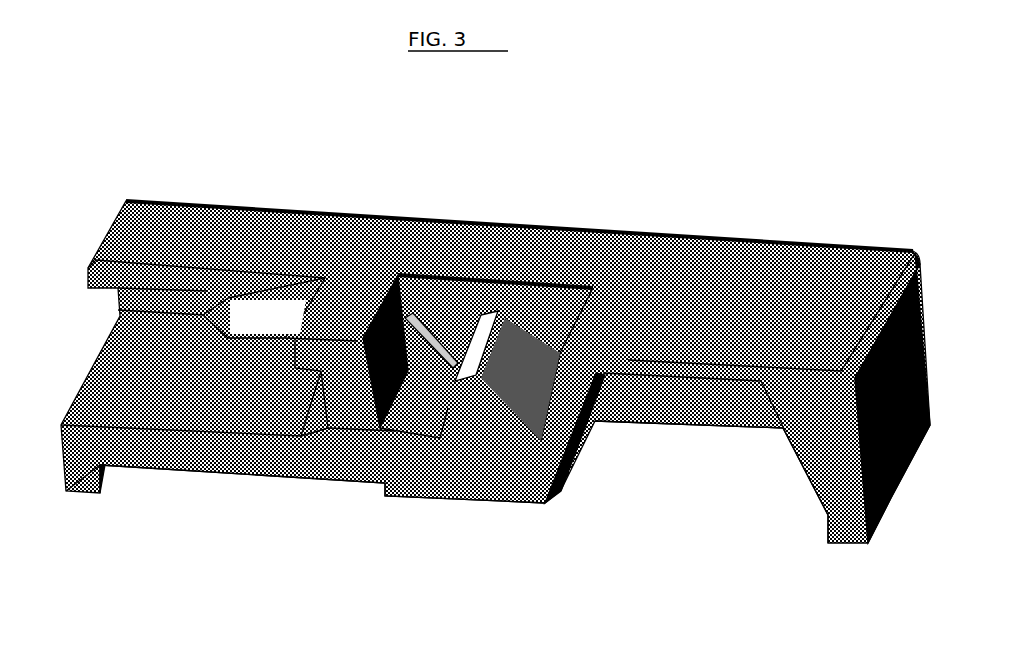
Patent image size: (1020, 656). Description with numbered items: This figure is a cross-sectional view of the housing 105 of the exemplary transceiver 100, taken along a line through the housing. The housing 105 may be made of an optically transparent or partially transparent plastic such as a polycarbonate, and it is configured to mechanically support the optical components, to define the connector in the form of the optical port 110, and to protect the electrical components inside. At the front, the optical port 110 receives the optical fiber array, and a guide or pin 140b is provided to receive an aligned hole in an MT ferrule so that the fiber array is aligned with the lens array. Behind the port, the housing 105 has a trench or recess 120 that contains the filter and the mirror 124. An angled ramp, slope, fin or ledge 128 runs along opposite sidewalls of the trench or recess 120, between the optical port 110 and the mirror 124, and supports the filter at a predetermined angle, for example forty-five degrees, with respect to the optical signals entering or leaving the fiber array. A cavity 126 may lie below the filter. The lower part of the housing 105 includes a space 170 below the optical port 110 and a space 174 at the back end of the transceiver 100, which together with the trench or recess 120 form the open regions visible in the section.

The transceiver 100 is at (512, 97).
The housing 105 is at (712, 242).
The optical port 110 is at (137, 380).
The trench or recess 120 is at (463, 287).
The mirror 124 is at (530, 337).
The cavity 126 is at (427, 387).
The angled ramp, slope, fin or ledge 128 is at (420, 320).
The guide or pin 140b is at (247, 296).
The space 170 is at (233, 492).
The space 174 is at (707, 459).